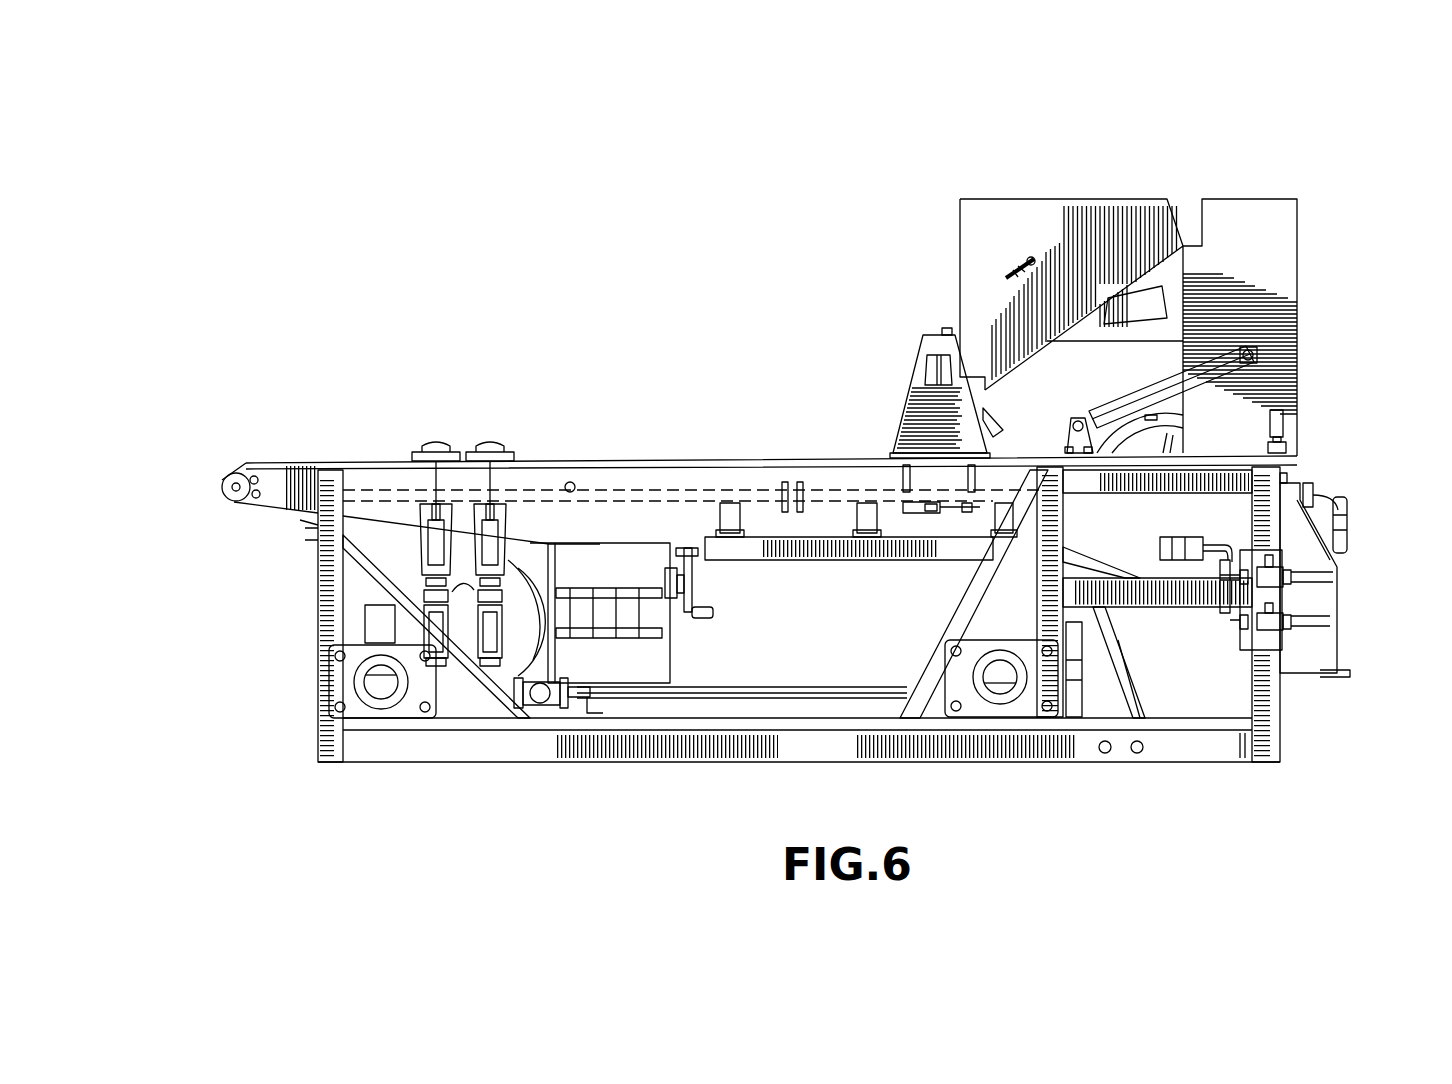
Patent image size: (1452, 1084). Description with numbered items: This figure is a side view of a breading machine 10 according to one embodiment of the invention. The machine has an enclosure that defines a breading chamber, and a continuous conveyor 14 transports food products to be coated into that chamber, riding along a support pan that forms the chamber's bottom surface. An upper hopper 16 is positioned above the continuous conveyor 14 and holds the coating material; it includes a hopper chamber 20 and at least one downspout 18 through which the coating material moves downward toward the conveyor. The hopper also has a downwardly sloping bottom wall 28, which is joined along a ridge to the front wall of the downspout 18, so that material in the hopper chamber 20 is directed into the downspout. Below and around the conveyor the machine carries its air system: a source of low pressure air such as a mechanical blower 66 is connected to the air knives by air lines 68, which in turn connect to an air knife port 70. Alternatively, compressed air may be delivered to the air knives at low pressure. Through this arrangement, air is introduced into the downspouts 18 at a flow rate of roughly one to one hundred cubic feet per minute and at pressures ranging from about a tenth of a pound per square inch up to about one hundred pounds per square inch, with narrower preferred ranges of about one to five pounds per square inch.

The breading machine 10 is at (1327, 271).
The continuous conveyor 14 is at (638, 490).
The upper hopper 16 is at (933, 202).
The downspout 18 is at (1271, 317).
The hopper chamber 20 is at (960, 284).
The bottom wall 28 is at (217, 498).
The mechanical blower 66 is at (460, 631).
The air lines 68 is at (836, 692).
The air knife port 70 is at (1347, 523).